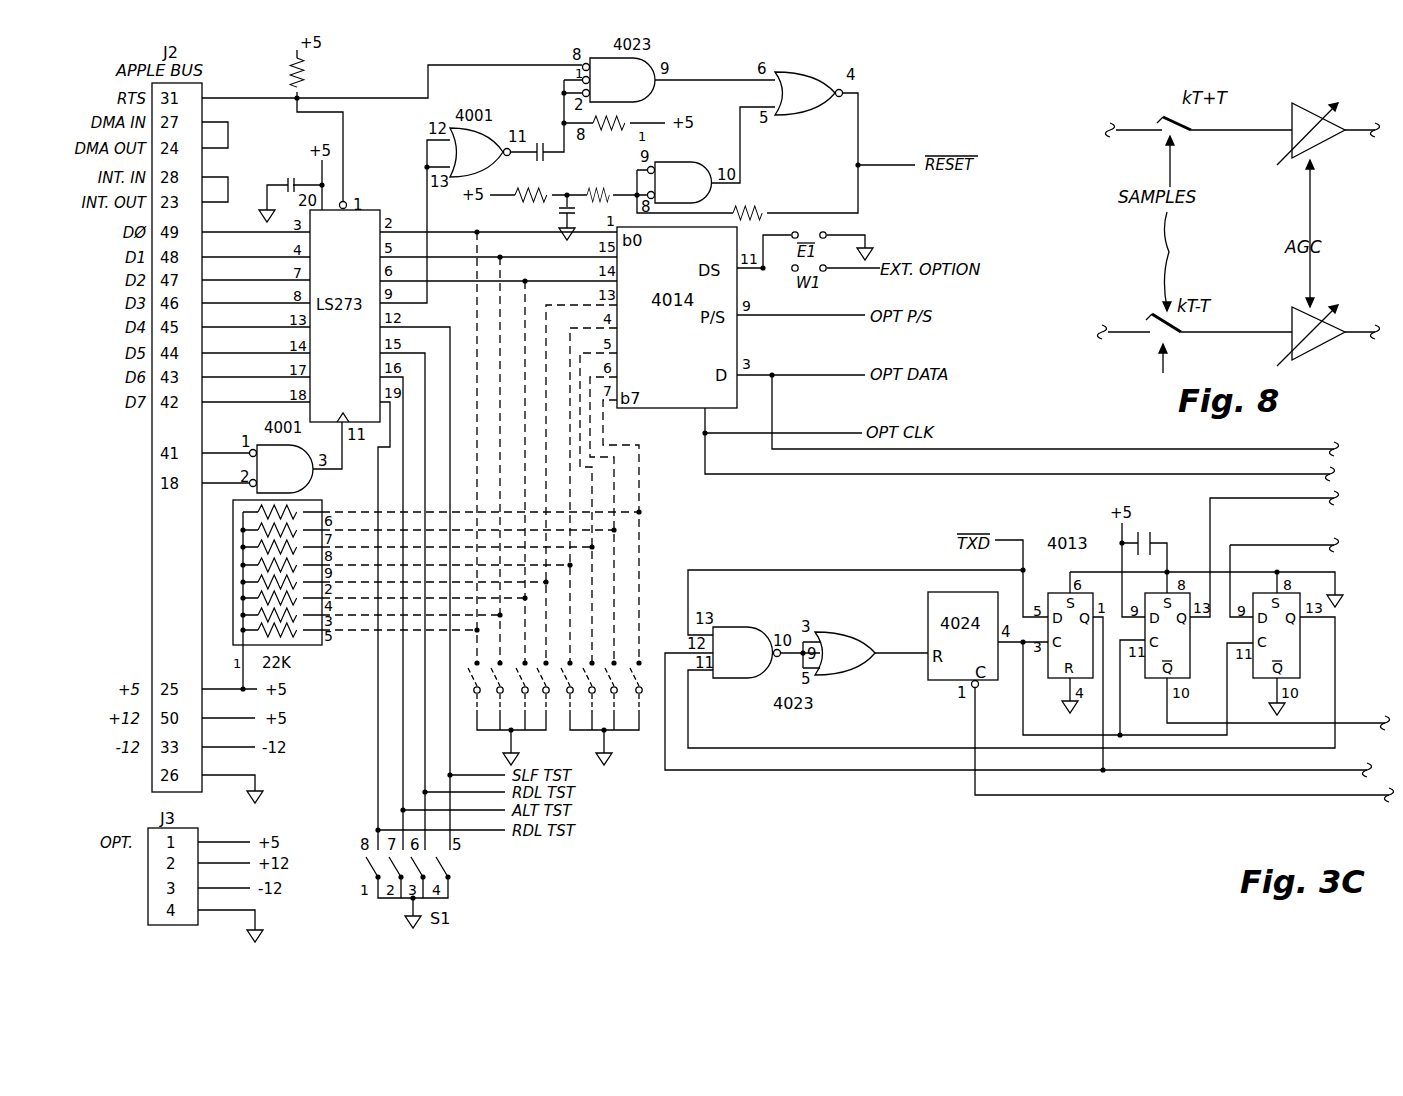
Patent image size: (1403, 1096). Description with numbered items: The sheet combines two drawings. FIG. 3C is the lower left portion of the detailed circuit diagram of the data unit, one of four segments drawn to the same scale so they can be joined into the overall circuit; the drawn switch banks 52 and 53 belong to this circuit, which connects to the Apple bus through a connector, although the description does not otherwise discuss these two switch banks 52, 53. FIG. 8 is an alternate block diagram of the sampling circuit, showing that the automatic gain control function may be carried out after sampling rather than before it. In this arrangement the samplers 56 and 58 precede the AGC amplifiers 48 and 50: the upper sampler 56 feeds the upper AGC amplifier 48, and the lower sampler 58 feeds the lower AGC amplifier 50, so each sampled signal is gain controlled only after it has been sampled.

In FIG. 8, the sampler 56 is at (1163, 117).
In FIG. 8, the AGC amplifier 48 is at (1308, 110).
In FIG. 8, the sampler 58 is at (1150, 314).
In FIG. 8, the AGC amplifier 50 is at (1316, 352).
In FIG. 3C, the DIP switch 52 is at (505, 706).
In FIG. 3C, the DIP switch 53 is at (598, 706).